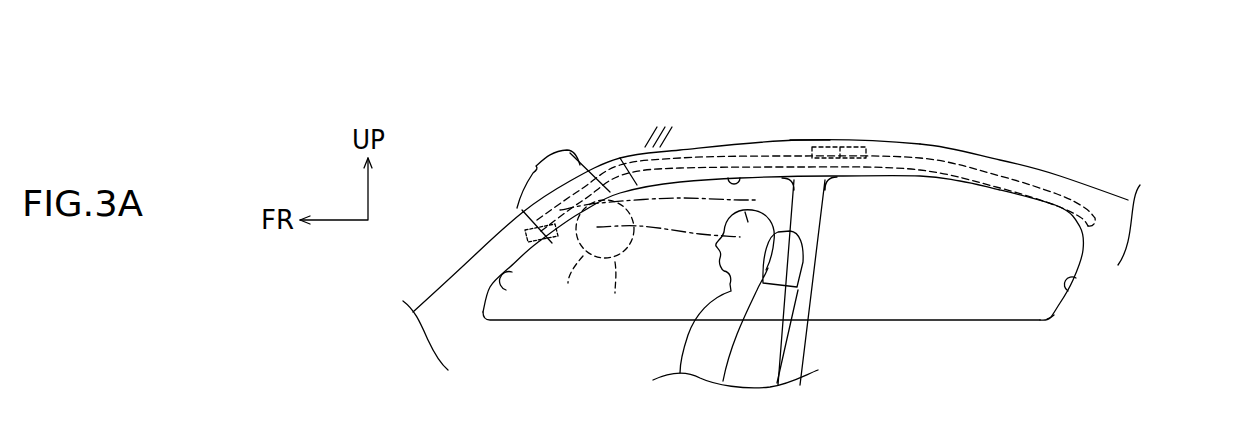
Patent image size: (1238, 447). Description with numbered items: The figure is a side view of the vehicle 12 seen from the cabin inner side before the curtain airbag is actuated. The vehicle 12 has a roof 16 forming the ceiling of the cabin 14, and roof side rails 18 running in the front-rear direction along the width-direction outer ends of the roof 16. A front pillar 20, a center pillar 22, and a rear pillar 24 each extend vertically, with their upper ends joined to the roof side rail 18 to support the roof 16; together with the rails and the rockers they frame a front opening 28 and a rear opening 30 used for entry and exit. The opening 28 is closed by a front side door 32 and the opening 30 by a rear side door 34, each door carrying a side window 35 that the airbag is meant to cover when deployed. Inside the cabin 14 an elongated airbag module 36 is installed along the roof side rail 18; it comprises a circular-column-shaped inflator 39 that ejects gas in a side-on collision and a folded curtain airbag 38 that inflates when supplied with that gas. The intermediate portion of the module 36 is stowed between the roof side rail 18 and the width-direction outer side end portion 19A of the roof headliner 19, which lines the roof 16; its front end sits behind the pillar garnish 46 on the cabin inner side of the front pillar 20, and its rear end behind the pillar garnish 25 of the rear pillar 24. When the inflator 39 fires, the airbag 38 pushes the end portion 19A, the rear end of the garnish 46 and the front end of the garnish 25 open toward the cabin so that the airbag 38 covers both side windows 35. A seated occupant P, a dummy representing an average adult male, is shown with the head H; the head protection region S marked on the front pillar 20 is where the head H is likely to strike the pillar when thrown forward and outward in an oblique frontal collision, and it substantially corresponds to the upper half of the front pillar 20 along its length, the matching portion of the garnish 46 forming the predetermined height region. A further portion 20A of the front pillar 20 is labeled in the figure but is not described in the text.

The vehicle 12 is at (1012, 145).
The cabin 14 is at (858, 385).
The roof 16 is at (828, 150).
The roof side rail 18 is at (782, 152).
The roof headliner 19 is at (680, 135).
The vehicle width direction outer side end portion 19A is at (735, 177).
The front pillar 20 is at (478, 252).
The front pillar upper portion 20A is at (570, 153).
The center pillar 22 is at (818, 205).
The rear pillar 24 is at (1062, 177).
The pillar garnish 25 is at (1115, 211).
The opening 28 is at (457, 246).
The opening 30 is at (1075, 284).
The front side door 32 is at (504, 338).
The rear side door 34 is at (1003, 343).
The side window 35 is at (585, 312).
The airbag module 36 is at (812, 130).
The curtain airbag 38 is at (937, 165).
The inflator 39 is at (885, 142).
The pillar garnish 46 is at (497, 236).
The head protection region S is at (577, 173).
The head H is at (668, 233).
The occupant P is at (706, 306).